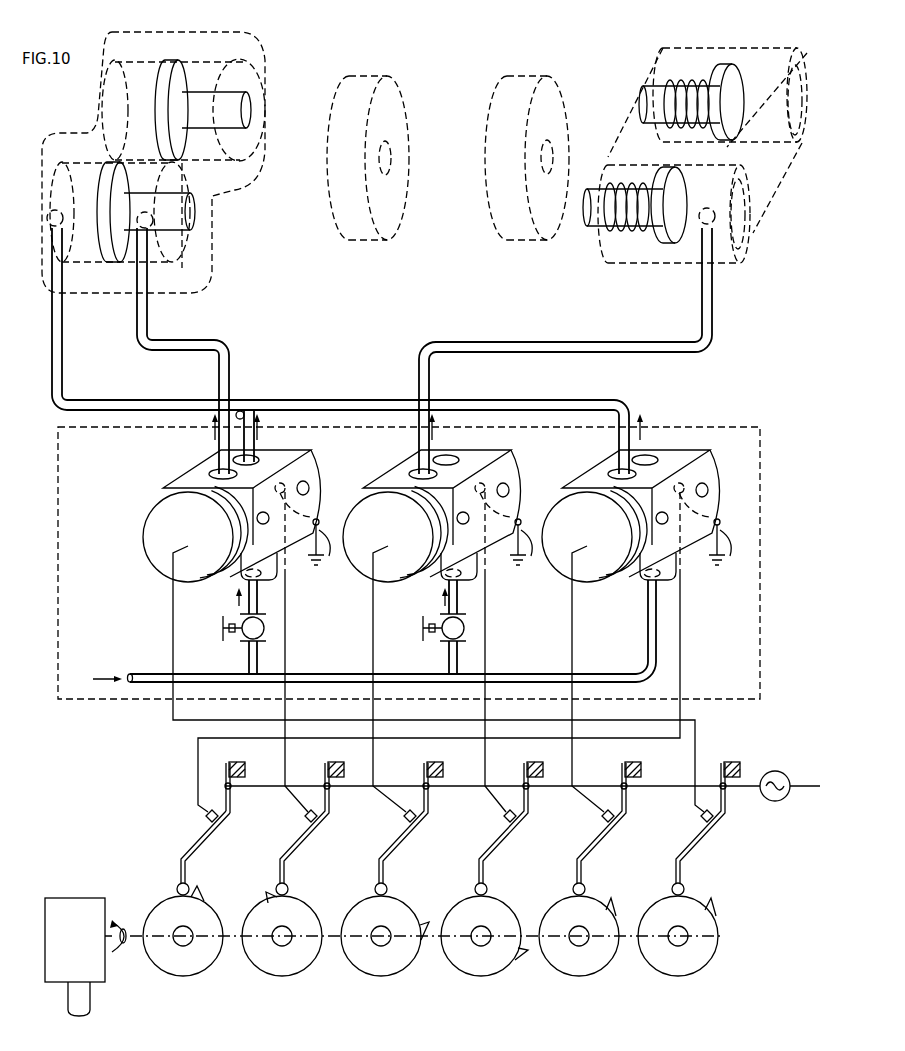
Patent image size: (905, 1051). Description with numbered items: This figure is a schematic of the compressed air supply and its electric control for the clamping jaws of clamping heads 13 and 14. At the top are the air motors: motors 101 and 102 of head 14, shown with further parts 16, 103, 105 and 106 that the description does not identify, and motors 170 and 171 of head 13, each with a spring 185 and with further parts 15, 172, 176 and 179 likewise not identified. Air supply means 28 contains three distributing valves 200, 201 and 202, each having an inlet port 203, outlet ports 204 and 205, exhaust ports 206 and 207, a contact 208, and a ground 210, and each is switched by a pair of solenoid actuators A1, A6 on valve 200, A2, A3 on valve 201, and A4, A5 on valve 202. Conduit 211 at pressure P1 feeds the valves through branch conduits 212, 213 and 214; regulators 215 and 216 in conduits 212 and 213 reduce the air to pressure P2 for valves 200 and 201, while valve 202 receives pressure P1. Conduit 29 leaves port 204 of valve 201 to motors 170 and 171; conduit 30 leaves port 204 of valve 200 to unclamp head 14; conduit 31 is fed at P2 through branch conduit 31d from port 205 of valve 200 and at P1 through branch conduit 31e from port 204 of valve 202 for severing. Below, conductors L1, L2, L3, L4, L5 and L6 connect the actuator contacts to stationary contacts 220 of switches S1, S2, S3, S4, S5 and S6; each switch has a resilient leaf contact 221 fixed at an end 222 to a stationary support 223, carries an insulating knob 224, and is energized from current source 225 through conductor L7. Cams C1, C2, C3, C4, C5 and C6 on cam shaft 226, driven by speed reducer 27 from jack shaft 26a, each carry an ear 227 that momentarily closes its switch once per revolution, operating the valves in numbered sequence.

The housing 16 is at (197, 280).
The motor 102 is at (190, 47).
The motor 101 is at (117, 284).
The cylinder 103 is at (232, 70).
The piston 105 is at (163, 72).
The piston rod 106 is at (248, 100).
The clamping head 14 is at (359, 77).
The clamping head 13 is at (513, 77).
The housing 15 is at (772, 194).
The motor 170 is at (727, 45).
The motor 171 is at (647, 165).
The bore 172 is at (758, 64).
The piston 176 is at (725, 70).
The spring 185 is at (660, 82).
The rod 179 is at (645, 100).
The conduit 31 is at (63, 320).
The branch conduit 31e is at (620, 410).
The branch conduit 31d is at (239, 411).
The conduit 30 is at (148, 316).
The conduit 29 is at (541, 342).
The compressed air supply means 28 is at (692, 425).
The solenoid actuator A1 is at (280, 448).
The solenoid actuator A2 is at (473, 445).
The solenoid actuator A5 is at (675, 440).
The solenoid actuator A6 is at (200, 522).
The solenoid actuator A3 is at (397, 522).
The solenoid actuator A4 is at (595, 522).
The distributing valve 200 is at (224, 516).
The distributing valve 201 is at (432, 516).
The distributing valve 202 is at (631, 516).
The outlet port 204 is at (216, 472).
The outlet port 205 is at (262, 457).
The exhaust port 207 is at (309, 482).
The contact 208 is at (317, 512).
The exhaust port 206 is at (258, 521).
The inlet port 203 is at (272, 577).
The ground 210 is at (528, 550).
The pressure-reducing regulator 215 is at (222, 628).
The pressure-reducing regulator 216 is at (422, 628).
The branch conduit 212 is at (249, 658).
The branch conduit 213 is at (449, 658).
The conduit 211 is at (147, 674).
The branch conduit 214 is at (647, 634).
The pressure P1 is at (378, 548).
The pressure P2 is at (322, 512).
The conductor L6 is at (173, 618).
The conductor L1 is at (286, 632).
The conductor L3 is at (373, 631).
The conductor L2 is at (486, 631).
The conductor L4 is at (573, 631).
The conductor L5 is at (681, 628).
The conductor L7 is at (245, 789).
The switch S5 is at (213, 813).
The switch S1 is at (292, 836).
The switch S3 is at (392, 836).
The switch S2 is at (492, 836).
The switch S4 is at (592, 836).
The switch S6 is at (692, 836).
The stationary support 223 is at (244, 770).
The end 222 is at (225, 766).
The resilient leaf contact 221 is at (190, 836).
The stationary contact 220 is at (206, 812).
The insulating knob 224 is at (177, 889).
The source of electrical current 225 is at (777, 769).
The cam C5 is at (192, 921).
The cam C1 is at (290, 921).
The cam C3 is at (391, 921).
The cam C2 is at (490, 921).
The cam C4 is at (589, 921).
The cam C6 is at (688, 921).
The ear 227 is at (198, 893).
The speed reducer 27 is at (70, 898).
The jack shaft 26a is at (88, 1003).
The cam shaft 226 is at (124, 951).